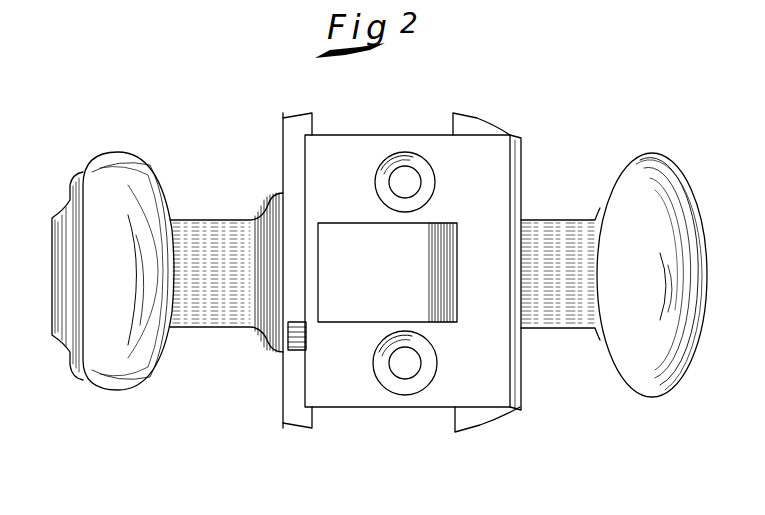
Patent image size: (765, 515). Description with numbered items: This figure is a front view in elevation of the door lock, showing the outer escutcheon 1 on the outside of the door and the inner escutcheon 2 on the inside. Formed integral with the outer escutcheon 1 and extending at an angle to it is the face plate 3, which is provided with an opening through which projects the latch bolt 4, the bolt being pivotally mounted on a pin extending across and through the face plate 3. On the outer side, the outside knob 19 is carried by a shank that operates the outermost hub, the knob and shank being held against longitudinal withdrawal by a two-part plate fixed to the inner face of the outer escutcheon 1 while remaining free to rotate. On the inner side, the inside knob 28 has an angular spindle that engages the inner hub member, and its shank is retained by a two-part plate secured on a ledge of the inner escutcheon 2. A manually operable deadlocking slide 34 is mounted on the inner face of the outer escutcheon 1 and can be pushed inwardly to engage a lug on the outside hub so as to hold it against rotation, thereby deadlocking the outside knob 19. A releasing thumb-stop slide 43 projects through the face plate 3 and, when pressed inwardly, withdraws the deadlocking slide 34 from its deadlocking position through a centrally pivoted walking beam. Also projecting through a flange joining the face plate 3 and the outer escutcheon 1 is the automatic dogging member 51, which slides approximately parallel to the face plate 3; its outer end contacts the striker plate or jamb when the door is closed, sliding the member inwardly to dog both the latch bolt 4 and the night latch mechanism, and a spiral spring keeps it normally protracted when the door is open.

The outer escutcheon 1 is at (297, 125).
The inner escutcheon 2 is at (522, 152).
The face plate 3 is at (367, 397).
The latch bolt 4 is at (397, 242).
The outside knob 19 is at (210, 312).
The inside knob 28 is at (667, 370).
The deadlocking slide 34 is at (405, 367).
The releasing thumb-stop slide 43 is at (403, 180).
The automatic dogging member 51 is at (295, 352).